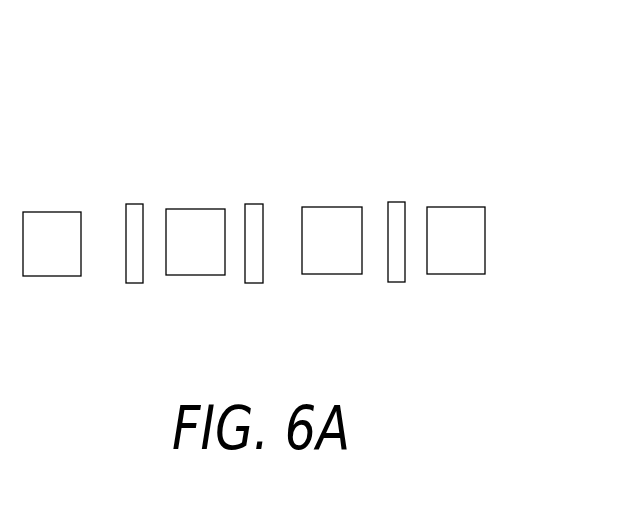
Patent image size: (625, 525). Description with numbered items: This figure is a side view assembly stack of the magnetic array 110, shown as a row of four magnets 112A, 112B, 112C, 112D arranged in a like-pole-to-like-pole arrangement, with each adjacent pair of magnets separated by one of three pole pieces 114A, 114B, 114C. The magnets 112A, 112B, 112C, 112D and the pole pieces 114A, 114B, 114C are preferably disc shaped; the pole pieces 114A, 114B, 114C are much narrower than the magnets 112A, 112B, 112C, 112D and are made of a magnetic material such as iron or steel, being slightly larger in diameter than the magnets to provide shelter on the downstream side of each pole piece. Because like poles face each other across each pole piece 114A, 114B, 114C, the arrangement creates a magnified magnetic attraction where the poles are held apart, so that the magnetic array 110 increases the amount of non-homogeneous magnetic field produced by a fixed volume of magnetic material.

The magnetic array 110 is at (307, 70).
The magnet 112A is at (51, 211).
The magnet 112B is at (194, 209).
The magnet 112C is at (332, 207).
The magnet 112D is at (455, 206).
The pole piece 114A is at (133, 285).
The pole piece 114B is at (253, 283).
The pole piece 114C is at (397, 282).